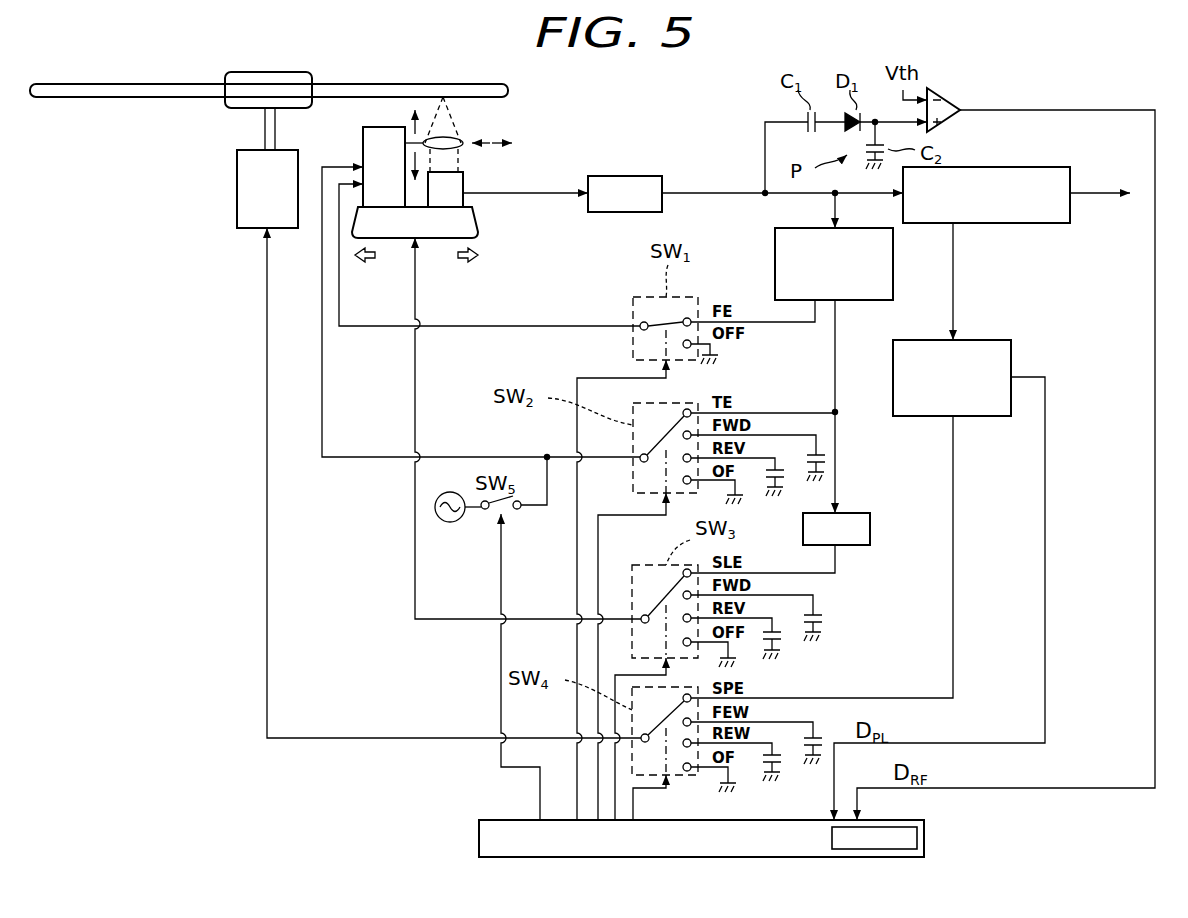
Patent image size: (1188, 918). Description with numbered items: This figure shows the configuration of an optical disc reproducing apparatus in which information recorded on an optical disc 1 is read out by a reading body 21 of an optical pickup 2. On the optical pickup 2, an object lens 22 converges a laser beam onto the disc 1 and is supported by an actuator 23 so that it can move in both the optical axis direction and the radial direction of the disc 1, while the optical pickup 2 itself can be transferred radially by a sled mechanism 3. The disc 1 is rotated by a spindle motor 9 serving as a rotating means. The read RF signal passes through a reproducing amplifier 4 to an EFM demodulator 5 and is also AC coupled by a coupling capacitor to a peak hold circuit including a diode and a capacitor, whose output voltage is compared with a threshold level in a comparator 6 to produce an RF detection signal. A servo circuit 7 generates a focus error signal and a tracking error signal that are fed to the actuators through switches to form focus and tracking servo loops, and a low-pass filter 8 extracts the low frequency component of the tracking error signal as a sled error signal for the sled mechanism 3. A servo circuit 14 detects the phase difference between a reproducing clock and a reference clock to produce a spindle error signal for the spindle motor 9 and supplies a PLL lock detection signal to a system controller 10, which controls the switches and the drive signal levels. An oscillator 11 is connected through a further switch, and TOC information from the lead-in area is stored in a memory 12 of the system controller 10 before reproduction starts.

The optical disc 1 is at (58, 98).
The optical pickup 2 is at (527, 123).
The sled mechanism 3 is at (390, 240).
The reproducing amplifier 4 is at (612, 176).
The EFM demodulator 5 is at (1036, 167).
The comparator 6 is at (954, 93).
The servo circuit 7 is at (893, 260).
The low-pass filter 8 is at (856, 513).
The spindle motor 9 is at (245, 150).
The system controller 10 is at (924, 832).
The oscillator 11 is at (452, 522).
The memory 12 is at (917, 849).
The servo circuit 14 is at (988, 340).
The reading body 21 is at (463, 200).
The object lens 22 is at (462, 146).
The actuator 23 is at (363, 147).